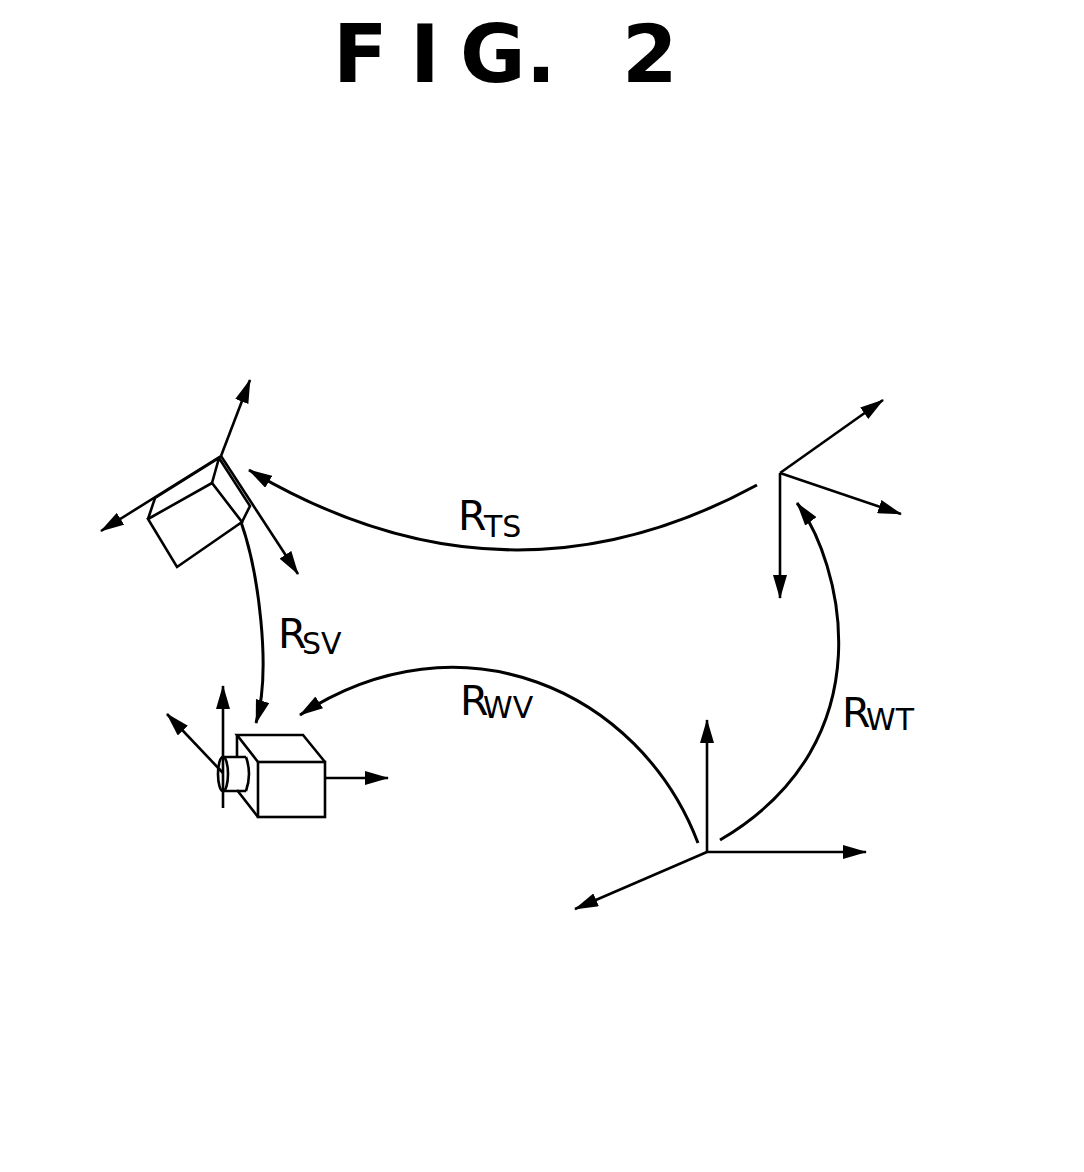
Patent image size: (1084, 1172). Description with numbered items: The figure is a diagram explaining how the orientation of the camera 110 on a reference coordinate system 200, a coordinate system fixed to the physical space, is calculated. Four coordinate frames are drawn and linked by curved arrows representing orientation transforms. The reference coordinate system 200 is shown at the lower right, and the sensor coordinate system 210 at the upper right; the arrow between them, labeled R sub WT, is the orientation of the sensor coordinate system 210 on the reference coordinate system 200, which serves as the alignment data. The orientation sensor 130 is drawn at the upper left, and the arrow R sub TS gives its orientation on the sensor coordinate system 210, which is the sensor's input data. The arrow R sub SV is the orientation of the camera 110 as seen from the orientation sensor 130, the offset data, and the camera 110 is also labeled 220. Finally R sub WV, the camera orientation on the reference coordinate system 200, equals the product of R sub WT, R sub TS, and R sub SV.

The orientation sensor 130 is at (221, 455).
The sensor coordinate system 210 is at (773, 467).
The reference coordinate system 200 is at (708, 860).
The camera 110 is at (236, 802).
The camera coordinate system 220 is at (233, 810).